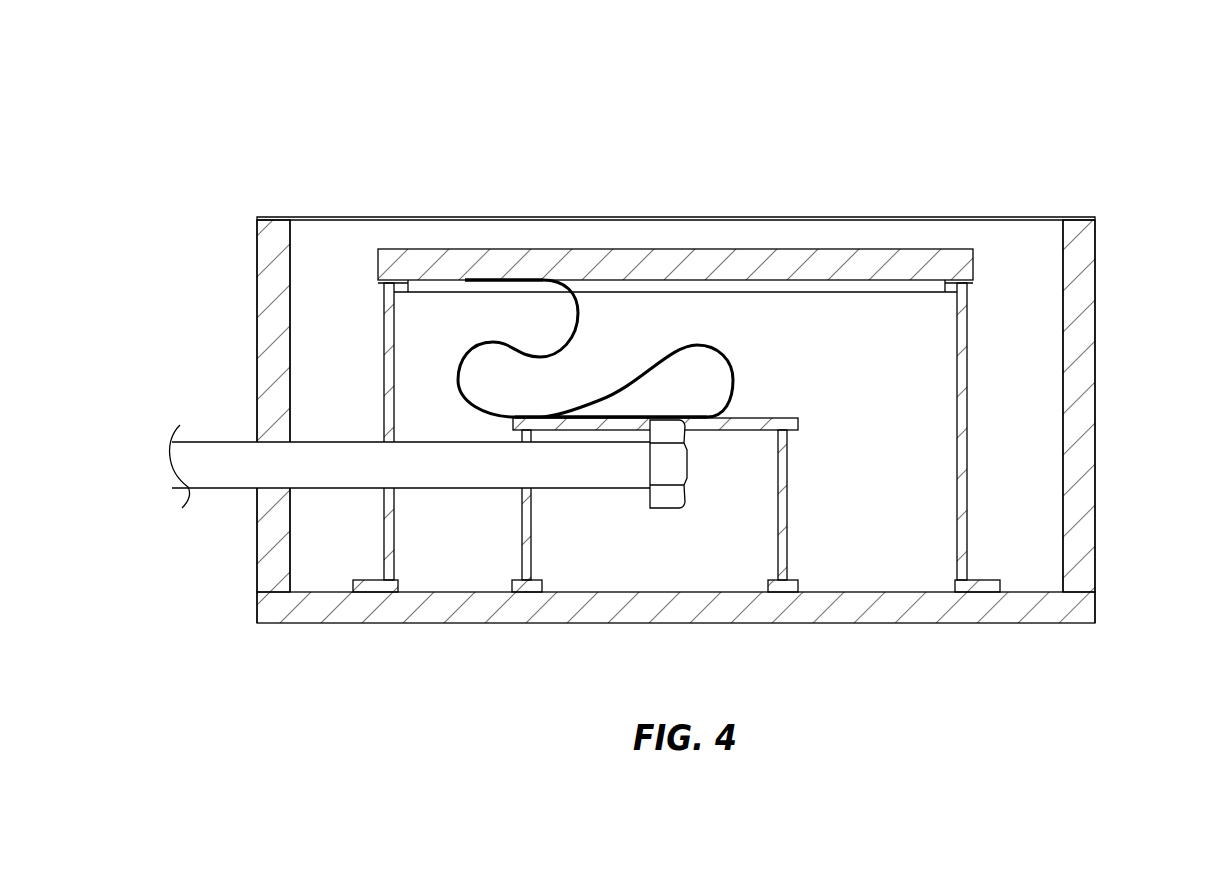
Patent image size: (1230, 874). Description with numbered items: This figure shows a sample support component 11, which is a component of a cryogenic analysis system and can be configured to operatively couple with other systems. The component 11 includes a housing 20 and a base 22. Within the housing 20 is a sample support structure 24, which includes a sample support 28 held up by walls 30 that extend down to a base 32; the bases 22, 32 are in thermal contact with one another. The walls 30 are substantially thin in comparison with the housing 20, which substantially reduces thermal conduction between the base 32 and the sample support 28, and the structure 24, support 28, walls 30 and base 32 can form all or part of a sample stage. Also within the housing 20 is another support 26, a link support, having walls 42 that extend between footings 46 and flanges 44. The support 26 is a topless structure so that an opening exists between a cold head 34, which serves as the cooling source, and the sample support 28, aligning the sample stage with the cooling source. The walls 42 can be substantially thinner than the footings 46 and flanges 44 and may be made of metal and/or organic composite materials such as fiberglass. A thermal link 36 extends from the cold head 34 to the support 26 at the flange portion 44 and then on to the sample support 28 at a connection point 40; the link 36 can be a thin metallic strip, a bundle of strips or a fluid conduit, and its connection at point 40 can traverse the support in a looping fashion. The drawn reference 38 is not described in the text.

The sample support component 11 is at (1070, 120).
The housing 20 is at (1083, 372).
The base 22 is at (913, 603).
The sample support structure 24 is at (675, 222).
The link support 26 is at (724, 480).
The sample support 28 is at (580, 258).
The walls 30 is at (387, 372).
The base 32 is at (375, 588).
The cold head 34 is at (675, 463).
The thermal link 36 is at (610, 295).
The lower portion of spring 38 is at (523, 425).
The connection point 40 is at (500, 292).
The walls 42 is at (532, 555).
The flanges 44 is at (785, 416).
The footings 46 is at (521, 595).